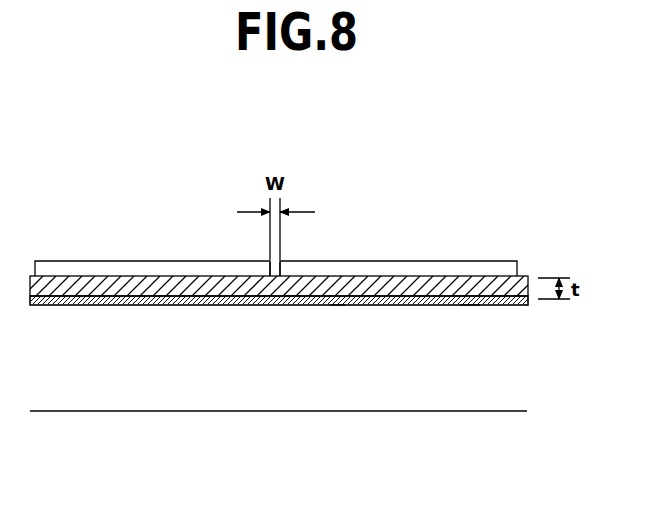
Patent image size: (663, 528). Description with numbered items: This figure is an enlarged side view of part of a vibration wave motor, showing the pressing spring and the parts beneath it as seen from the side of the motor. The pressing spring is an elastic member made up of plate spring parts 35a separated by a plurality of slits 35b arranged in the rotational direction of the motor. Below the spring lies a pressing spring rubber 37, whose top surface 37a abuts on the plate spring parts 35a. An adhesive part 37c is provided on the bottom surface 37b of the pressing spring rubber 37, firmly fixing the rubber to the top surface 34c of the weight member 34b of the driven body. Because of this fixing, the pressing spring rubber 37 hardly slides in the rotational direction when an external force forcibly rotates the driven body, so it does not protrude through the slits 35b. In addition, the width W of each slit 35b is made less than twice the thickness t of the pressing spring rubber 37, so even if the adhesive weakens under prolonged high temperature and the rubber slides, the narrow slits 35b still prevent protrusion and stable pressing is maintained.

The weight member 34b is at (425, 390).
The top surface of the weight member 34c is at (337, 305).
The plate spring part 35a is at (97, 270).
The slit 35b is at (268, 270).
The pressing spring rubber 37 is at (582, 158).
The top surface of the pressing spring rubber 37a is at (470, 280).
The bottom surface of the pressing spring rubber 37b is at (488, 298).
The adhesive part 37c is at (470, 305).